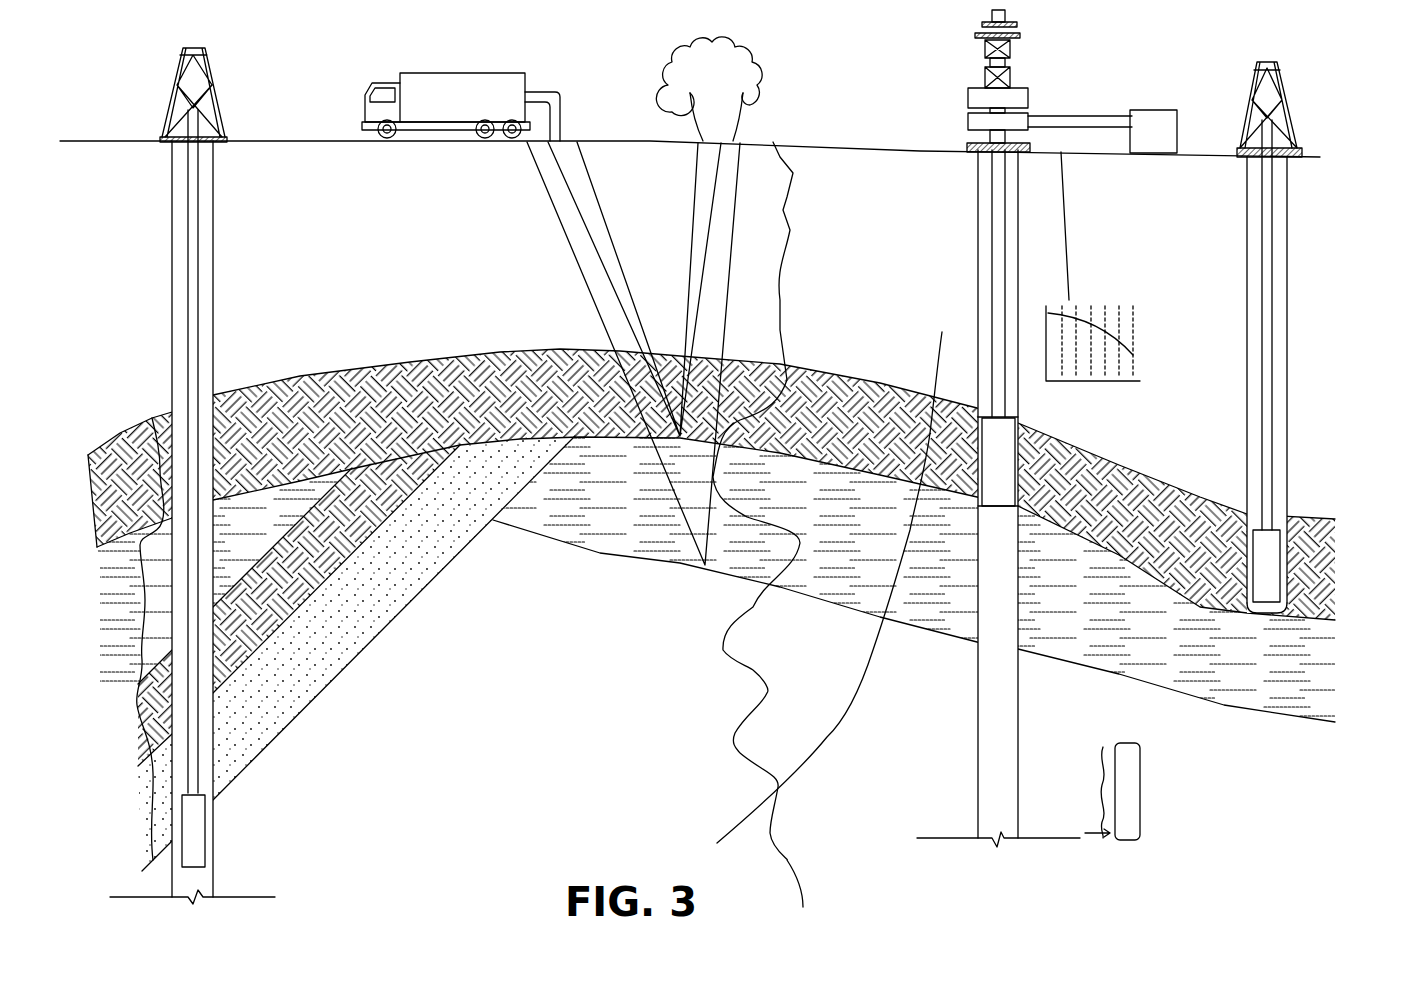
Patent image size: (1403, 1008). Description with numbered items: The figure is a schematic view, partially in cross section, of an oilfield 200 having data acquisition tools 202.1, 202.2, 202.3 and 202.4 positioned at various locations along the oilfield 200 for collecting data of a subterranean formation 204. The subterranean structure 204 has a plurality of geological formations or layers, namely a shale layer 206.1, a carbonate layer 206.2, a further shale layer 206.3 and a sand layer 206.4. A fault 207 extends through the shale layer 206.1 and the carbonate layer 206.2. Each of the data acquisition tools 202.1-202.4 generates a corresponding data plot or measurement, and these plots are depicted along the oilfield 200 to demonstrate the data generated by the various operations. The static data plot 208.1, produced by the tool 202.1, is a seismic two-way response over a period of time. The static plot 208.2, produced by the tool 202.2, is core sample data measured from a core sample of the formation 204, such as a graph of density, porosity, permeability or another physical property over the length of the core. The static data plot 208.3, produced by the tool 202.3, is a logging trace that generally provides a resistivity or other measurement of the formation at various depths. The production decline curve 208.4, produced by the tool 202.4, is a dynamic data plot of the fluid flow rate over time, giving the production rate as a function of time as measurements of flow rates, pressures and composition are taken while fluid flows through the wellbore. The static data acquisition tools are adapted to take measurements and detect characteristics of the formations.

The oilfield 200 is at (1231, 66).
The data acquisition tool 202.1 is at (435, 74).
The data acquisition tool 202.2 is at (1280, 577).
The data acquisition tool 202.3 is at (213, 840).
The data acquisition tool 202.4 is at (1017, 478).
The subterranean formation 204 is at (558, 656).
The shale layer 206.1 is at (330, 433).
The carbonate layer 206.2 is at (260, 538).
The shale layer 206.3 is at (320, 574).
The sand layer 206.4 is at (370, 618).
The fault 207 is at (938, 353).
The static data plot 208.1 is at (753, 710).
The static data plot 208.2 is at (1103, 762).
The static data plot 208.3 is at (130, 607).
The production decline curve 208.4 is at (1095, 381).